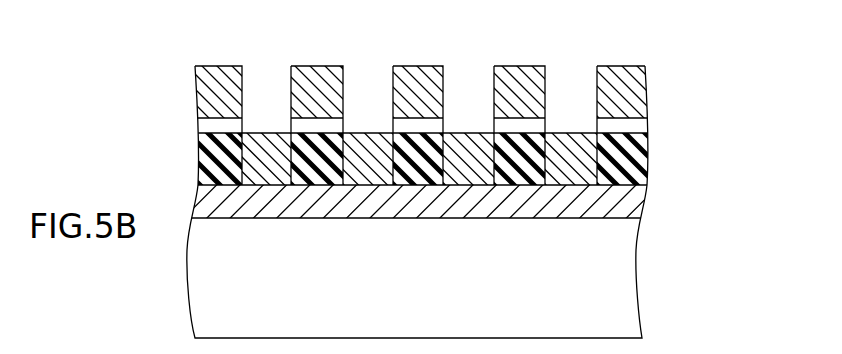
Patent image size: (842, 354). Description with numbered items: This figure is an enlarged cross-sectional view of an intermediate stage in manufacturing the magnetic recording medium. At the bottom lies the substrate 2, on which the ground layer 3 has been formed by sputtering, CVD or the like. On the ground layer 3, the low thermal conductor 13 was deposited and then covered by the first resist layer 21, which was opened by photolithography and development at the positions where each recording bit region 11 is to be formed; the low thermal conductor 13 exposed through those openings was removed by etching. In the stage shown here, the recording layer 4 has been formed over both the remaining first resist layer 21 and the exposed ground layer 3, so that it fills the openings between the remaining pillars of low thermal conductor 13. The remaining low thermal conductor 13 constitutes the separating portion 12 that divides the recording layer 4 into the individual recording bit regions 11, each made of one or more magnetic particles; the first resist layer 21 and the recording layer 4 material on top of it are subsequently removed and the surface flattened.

The substrate 2 is at (628, 277).
The ground layer 3 is at (635, 202).
The recording layer 4 is at (635, 92).
The recording bit region 11 is at (571, 141).
The separating portion 12 is at (465, 110).
The low thermal conductor 13 is at (638, 158).
The first resist layer 21 is at (637, 127).